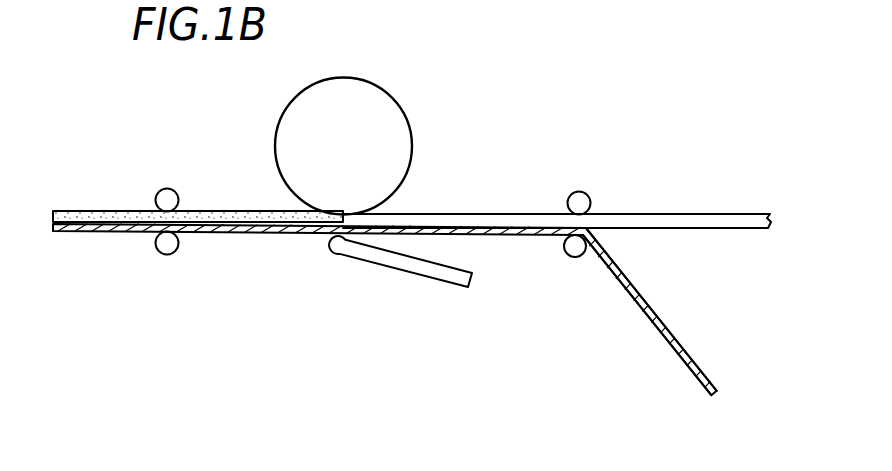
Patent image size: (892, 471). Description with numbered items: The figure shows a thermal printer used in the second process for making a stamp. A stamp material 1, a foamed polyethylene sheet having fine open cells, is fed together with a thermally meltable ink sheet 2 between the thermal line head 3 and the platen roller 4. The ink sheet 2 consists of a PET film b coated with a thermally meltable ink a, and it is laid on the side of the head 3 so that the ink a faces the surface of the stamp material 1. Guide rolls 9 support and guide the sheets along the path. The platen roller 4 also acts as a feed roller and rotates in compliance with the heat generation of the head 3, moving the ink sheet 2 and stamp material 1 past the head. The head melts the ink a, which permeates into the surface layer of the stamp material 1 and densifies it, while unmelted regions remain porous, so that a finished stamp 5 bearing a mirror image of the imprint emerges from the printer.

The stamp material 1 is at (676, 213).
The thermally meltable ink sheet 2 is at (401, 315).
The thermal line head 3 is at (338, 254).
The platen roller 4 is at (405, 148).
The stamp 5 is at (95, 209).
The guide roll 9 is at (163, 253).
The thermally meltable ink a is at (705, 375).
The PET film b is at (683, 359).